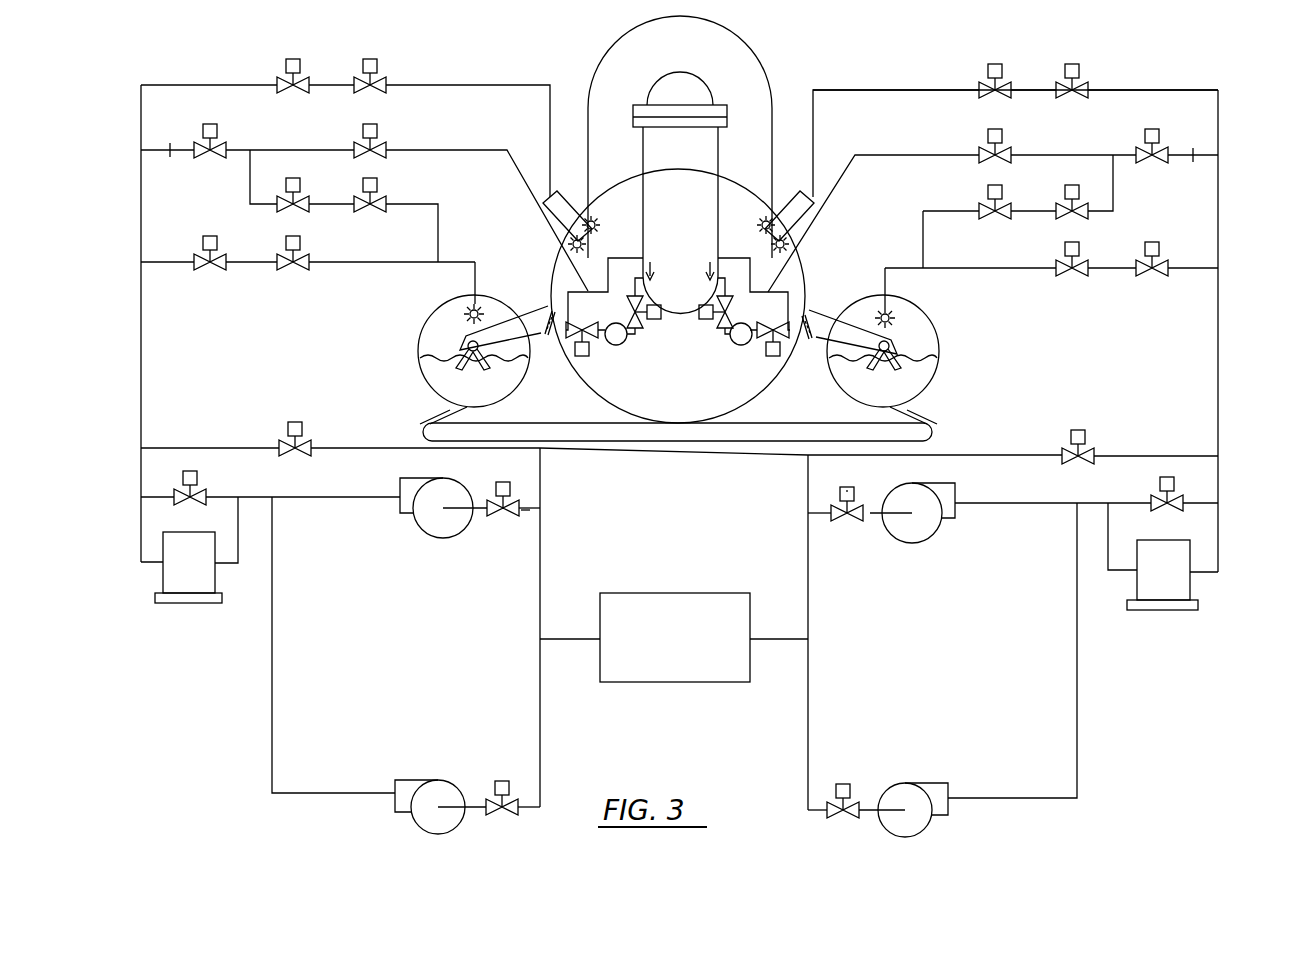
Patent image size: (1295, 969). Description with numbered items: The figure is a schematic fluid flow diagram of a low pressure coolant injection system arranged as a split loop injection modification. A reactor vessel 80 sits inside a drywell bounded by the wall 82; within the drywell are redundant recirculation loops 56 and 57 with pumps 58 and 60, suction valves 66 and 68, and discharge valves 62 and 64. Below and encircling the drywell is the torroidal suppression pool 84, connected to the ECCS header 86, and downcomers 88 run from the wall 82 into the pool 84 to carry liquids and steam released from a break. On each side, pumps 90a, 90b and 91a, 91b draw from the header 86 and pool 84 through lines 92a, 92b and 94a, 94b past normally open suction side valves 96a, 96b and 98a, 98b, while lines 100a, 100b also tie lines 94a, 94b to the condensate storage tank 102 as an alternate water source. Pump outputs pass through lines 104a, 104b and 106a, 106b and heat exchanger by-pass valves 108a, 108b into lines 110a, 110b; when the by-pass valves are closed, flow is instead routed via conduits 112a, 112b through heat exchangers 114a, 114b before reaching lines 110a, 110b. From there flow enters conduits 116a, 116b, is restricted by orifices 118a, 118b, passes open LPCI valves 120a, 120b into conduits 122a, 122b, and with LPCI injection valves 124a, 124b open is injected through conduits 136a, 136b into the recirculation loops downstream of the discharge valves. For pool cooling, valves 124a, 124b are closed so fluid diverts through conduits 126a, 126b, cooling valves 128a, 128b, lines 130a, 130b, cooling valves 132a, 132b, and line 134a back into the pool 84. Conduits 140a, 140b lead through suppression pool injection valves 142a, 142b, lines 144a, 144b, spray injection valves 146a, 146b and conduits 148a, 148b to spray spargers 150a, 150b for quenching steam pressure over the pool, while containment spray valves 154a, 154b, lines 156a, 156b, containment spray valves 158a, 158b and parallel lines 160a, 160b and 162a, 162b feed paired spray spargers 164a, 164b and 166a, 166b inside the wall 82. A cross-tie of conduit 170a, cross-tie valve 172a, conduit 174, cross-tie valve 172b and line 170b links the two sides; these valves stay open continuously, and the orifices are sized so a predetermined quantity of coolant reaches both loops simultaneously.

The recirculation loop 56 is at (738, 226).
The recirculation loop 57 is at (630, 224).
The recirculation pump 58 is at (742, 345).
The recirculation pump 60 is at (614, 345).
The discharge valve 62 is at (776, 302).
The discharge valve 64 is at (585, 302).
The suction valve 66 is at (716, 328).
The suction valve 68 is at (642, 320).
The reactor vessel 80 is at (721, 143).
The drywell wall 82 is at (750, 46).
The suppression pool 84 is at (418, 350).
The ECCS header 86 is at (773, 423).
The downcomers 88 is at (546, 312).
The pump 90a is at (936, 540).
The pump 90b is at (433, 538).
The pump 91a is at (923, 783).
The pump 91b is at (437, 780).
The line 92a is at (830, 518).
The line 92b is at (528, 510).
The line 94a is at (809, 608).
The line 94b is at (540, 608).
The suction side valve 96a is at (852, 486).
The suction side valve 96b is at (504, 480).
The suction side valve 98a is at (843, 784).
The suction side valve 98b is at (502, 780).
The line 100a is at (768, 640).
The line 100b is at (577, 640).
The condensate storage tank 102 is at (678, 593).
The line 104a is at (992, 503).
The line 104b is at (314, 497).
The line 106a is at (1040, 797).
The line 106b is at (348, 792).
The heat exchanger by-pass valve 108a is at (1161, 485).
The heat exchanger by-pass valve 108b is at (197, 478).
The line 110a is at (1218, 364).
The line 110b is at (141, 366).
The conduit 112a is at (1110, 534).
The conduit 112b is at (238, 524).
The heat exchanger 114a is at (1158, 610).
The heat exchanger 114b is at (190, 603).
The conduit 116a is at (1216, 165).
The conduit 116b is at (152, 151).
The orifice 118a is at (1197, 150).
The orifice 118b is at (166, 145).
The LPCI valve 120a is at (1153, 129).
The LPCI valve 120b is at (209, 124).
The conduit 122a is at (1040, 154).
The conduit 122b is at (276, 149).
The LPCI injection valve 124a is at (990, 130).
The LPCI injection valve 124b is at (377, 125).
The conduit 126a is at (1114, 188).
The conduit 126b is at (250, 192).
The cooling valve 128a is at (1076, 218).
The cooling valve 128b is at (288, 210).
The line 130a is at (1030, 212).
The line 130b is at (330, 205).
The cooling valve 132a is at (990, 189).
The cooling valve 132b is at (378, 182).
The line 134a is at (924, 210).
The conduit 136a is at (940, 155).
The conduit 136b is at (405, 149).
The conduit 140a is at (1196, 267).
The conduit 140b is at (168, 261).
The suppression pool injection valve 142a is at (1150, 276).
The suppression pool injection valve 142b is at (213, 270).
The line 144a is at (1107, 270).
The line 144b is at (252, 264).
The suppression pool spray injection valve 146a is at (1067, 276).
The suppression pool spray injection valve 146b is at (296, 270).
The conduit 148a is at (995, 269).
The conduit 148b is at (354, 263).
The spray sparger 150a is at (884, 308).
The spray sparger 150b is at (478, 308).
The containment spray valve 154a is at (1078, 66).
The containment spray valve 154b is at (292, 60).
The line 156a is at (1033, 89).
The line 156b is at (332, 84).
The containment spray valve 158a is at (993, 64).
The containment spray valve 158b is at (375, 59).
The line 160a is at (845, 90).
The line 160b is at (528, 85).
The line 162a is at (786, 210).
The line 162b is at (572, 210).
The spray sparger 164a is at (788, 240).
The spray sparger 164b is at (570, 240).
The spray sparger 166a is at (769, 216).
The spray sparger 166b is at (589, 216).
The conduit 170a is at (1121, 456).
The line 170b is at (245, 448).
The cross-tie valve 172a is at (1079, 430).
The cross-tie valve 172b is at (296, 422).
The conduit 174 is at (683, 455).